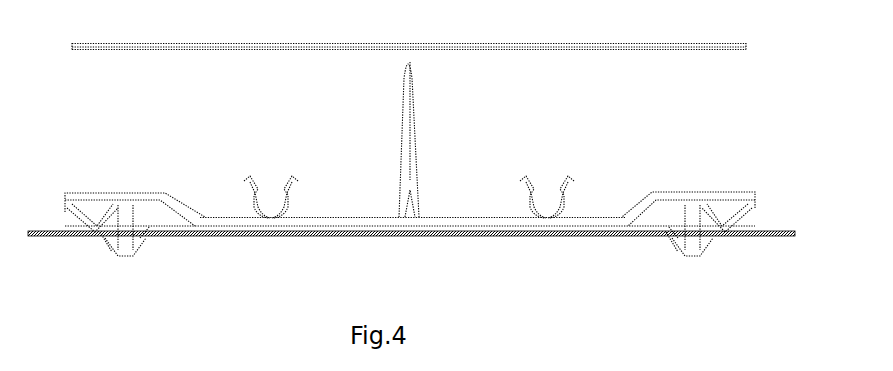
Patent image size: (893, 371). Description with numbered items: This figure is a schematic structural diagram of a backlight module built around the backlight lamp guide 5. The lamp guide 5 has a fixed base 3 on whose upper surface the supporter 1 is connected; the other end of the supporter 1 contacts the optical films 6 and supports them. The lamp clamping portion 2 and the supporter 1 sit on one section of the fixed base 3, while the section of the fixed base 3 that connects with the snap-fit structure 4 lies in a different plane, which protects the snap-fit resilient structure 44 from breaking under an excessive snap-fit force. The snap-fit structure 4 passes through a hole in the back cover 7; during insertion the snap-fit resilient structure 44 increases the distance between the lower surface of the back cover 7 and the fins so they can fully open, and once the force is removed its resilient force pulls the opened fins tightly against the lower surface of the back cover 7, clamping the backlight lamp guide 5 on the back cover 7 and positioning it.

The supporter 1 is at (407, 92).
The lamp clamping portion 2 is at (570, 184).
The fixed base 3 is at (347, 220).
The snap-fit structure 4 is at (134, 258).
The backlight lamp guide 5 is at (500, 135).
The optical films 6 is at (727, 46).
The back cover 7 is at (471, 236).
The snap-fit resilient structure 44 is at (737, 229).